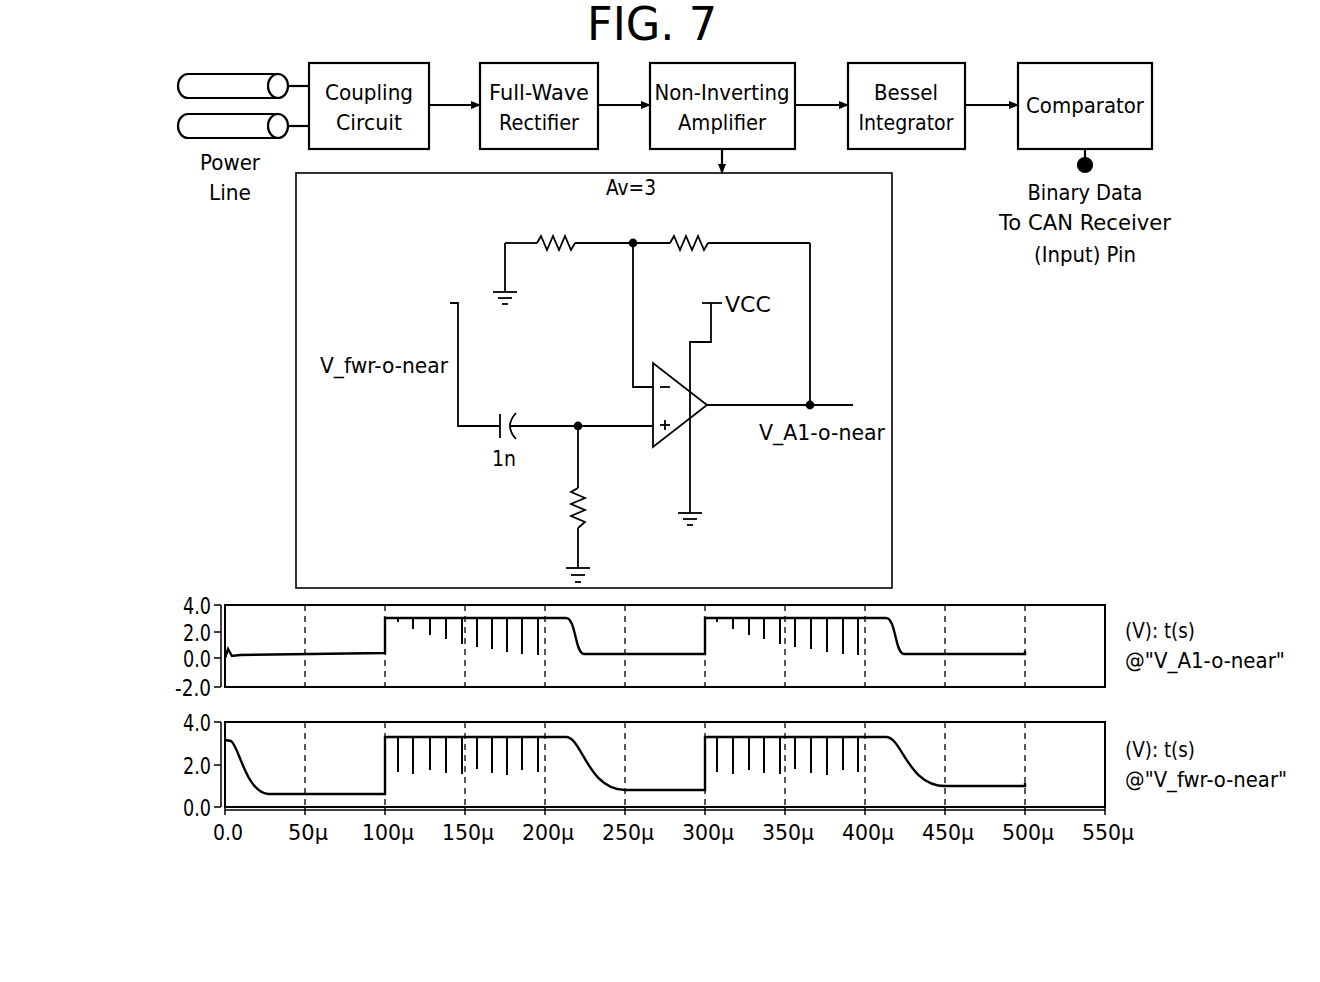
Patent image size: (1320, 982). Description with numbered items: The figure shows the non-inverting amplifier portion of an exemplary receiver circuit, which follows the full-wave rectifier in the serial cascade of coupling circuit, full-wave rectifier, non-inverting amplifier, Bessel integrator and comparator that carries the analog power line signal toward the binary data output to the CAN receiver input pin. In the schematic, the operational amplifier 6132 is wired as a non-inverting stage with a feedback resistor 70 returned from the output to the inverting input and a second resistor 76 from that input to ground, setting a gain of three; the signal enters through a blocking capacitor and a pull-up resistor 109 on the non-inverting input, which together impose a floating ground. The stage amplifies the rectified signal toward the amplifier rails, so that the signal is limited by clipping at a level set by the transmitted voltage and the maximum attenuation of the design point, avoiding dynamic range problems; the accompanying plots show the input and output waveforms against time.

The resistor r76 (4.99k) 76 is at (569, 247).
The resistor r70 (10k) 70 is at (720, 247).
The resistor r109 (100k) 109 is at (582, 497).
The operational amplifier lm6132 6132 is at (672, 414).